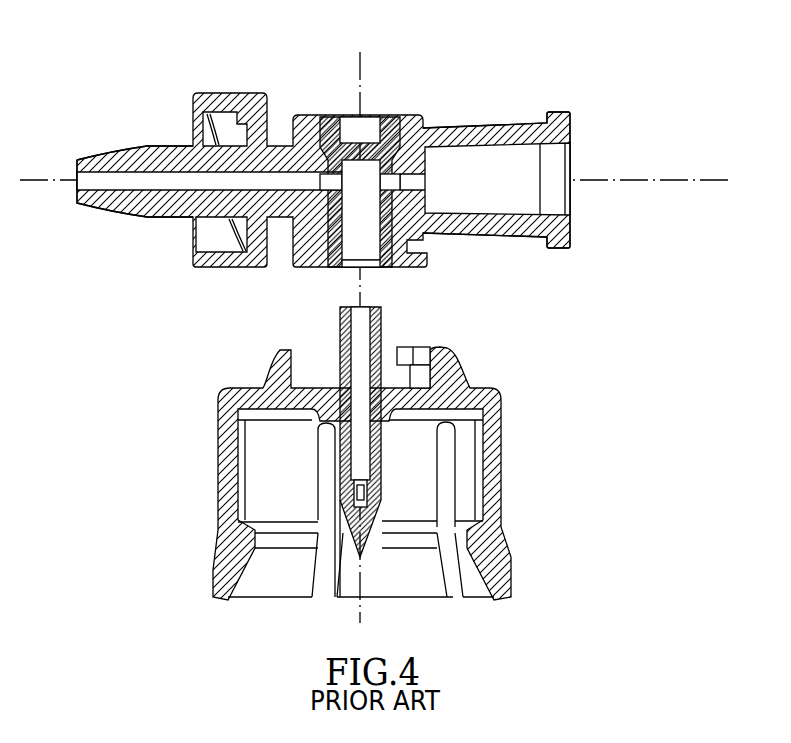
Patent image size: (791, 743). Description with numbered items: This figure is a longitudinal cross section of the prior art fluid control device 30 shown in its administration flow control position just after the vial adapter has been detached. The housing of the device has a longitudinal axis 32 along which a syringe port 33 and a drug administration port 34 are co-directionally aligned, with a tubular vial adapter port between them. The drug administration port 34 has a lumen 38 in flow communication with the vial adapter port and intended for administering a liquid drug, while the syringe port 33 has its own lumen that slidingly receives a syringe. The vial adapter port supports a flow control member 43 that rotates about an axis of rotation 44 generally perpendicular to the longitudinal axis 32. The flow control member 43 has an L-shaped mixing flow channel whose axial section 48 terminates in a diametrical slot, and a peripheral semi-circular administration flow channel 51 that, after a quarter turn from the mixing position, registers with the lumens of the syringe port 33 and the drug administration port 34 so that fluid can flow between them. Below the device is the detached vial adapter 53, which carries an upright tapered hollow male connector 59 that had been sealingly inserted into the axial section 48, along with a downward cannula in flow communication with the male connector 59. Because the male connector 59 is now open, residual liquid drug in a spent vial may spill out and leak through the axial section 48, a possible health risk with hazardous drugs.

The fluid control device 30 is at (364, 167).
The longitudinal axis 32 is at (648, 178).
The syringe port 33 is at (503, 125).
The drug administration port 34 is at (145, 146).
The lumen 38 is at (142, 190).
The flow control member 43 is at (392, 117).
The axis of rotation 44 is at (361, 67).
The axial section 48 is at (341, 248).
The administration flow channel 51 is at (292, 143).
The vial adapter 53 is at (502, 445).
The male connector 59 is at (382, 322).